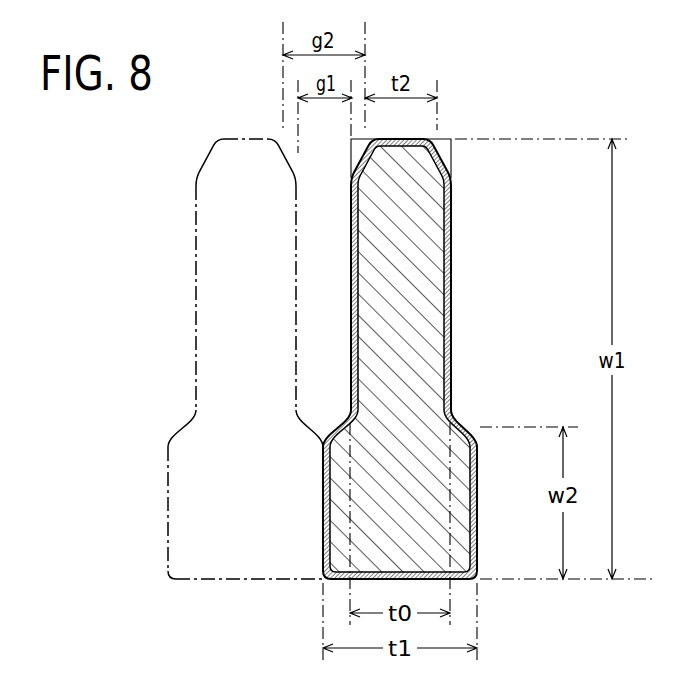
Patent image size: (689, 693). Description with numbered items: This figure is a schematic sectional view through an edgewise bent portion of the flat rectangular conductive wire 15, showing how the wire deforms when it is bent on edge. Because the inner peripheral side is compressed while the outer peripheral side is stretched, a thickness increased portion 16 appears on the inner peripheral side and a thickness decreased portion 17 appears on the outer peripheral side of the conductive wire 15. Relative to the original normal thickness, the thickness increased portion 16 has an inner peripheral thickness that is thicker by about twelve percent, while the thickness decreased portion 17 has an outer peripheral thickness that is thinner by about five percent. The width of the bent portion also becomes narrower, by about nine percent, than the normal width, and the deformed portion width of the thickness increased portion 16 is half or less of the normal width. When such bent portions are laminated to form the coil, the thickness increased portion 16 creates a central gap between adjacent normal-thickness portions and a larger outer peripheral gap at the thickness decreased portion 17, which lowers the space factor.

The conductive wire 15 is at (435, 296).
The thickness increased portion 16 is at (463, 478).
The thickness decreased portion 17 is at (443, 148).